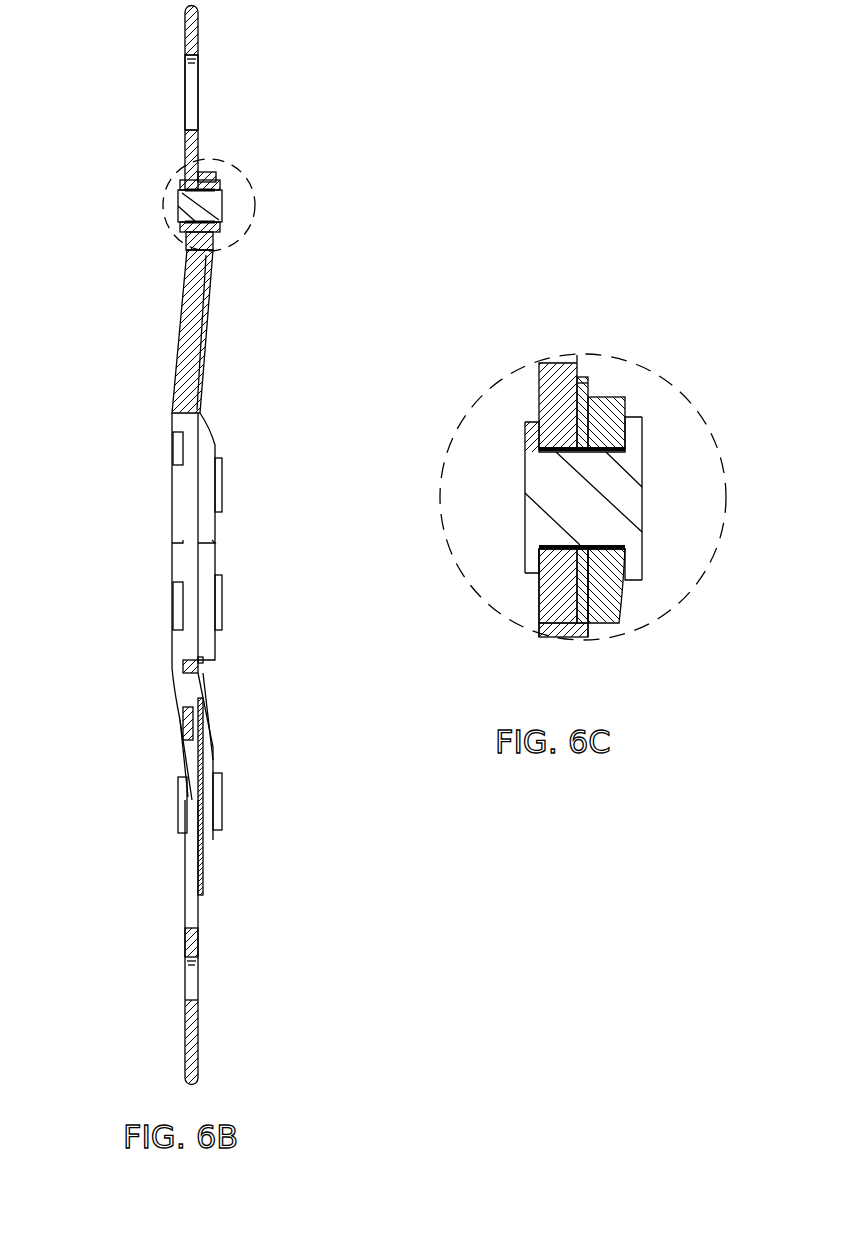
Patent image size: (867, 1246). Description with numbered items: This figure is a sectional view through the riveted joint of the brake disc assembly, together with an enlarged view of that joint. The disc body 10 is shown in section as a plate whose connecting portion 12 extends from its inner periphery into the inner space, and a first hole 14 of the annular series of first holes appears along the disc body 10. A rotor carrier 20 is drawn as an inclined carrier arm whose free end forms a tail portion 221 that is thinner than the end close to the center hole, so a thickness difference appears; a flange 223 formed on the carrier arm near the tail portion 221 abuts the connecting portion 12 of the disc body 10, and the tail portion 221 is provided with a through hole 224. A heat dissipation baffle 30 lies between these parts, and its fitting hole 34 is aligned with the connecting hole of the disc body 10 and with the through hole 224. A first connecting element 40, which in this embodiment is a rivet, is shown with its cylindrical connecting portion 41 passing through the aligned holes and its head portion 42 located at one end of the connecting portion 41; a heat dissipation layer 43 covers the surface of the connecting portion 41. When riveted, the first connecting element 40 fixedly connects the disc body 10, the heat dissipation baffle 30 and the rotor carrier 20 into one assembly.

In FIG. 6B, the disc body 10 is at (206, 30).
In FIG. 6B, the connecting portion 12 is at (185, 236).
In FIG. 6C, the connecting portion 12 is at (540, 588).
In FIG. 6B, the first hole 14 is at (186, 94).
In FIG. 6B, the rotor carrier 20 is at (163, 380).
In FIG. 6B, the heat dissipation baffle 30 is at (208, 862).
In FIG. 6C, the heat dissipation baffle 30 is at (578, 382).
In FIG. 6C, the fitting hole 34 is at (585, 390).
In FIG. 6B, the first connecting element 40 is at (85, 135).
In FIG. 6C, the first connecting element 40 is at (385, 440).
In FIG. 6B, the connecting portion 41 is at (200, 213).
In FIG. 6C, the connecting portion 41 is at (580, 475).
In FIG. 6B, the head portion 42 is at (182, 183).
In FIG. 6C, the head portion 42 is at (530, 548).
In FIG. 6B, the heat dissipation layer 43 is at (190, 205).
In FIG. 6C, the heat dissipation layer 43 is at (550, 455).
In FIG. 6B, the tail portion 221 is at (218, 184).
In FIG. 6C, the tail portion 221 is at (612, 430).
In FIG. 6B, the flange 223 is at (190, 237).
In FIG. 6C, the flange 223 is at (565, 628).
In FIG. 6C, the through hole 224 is at (624, 600).